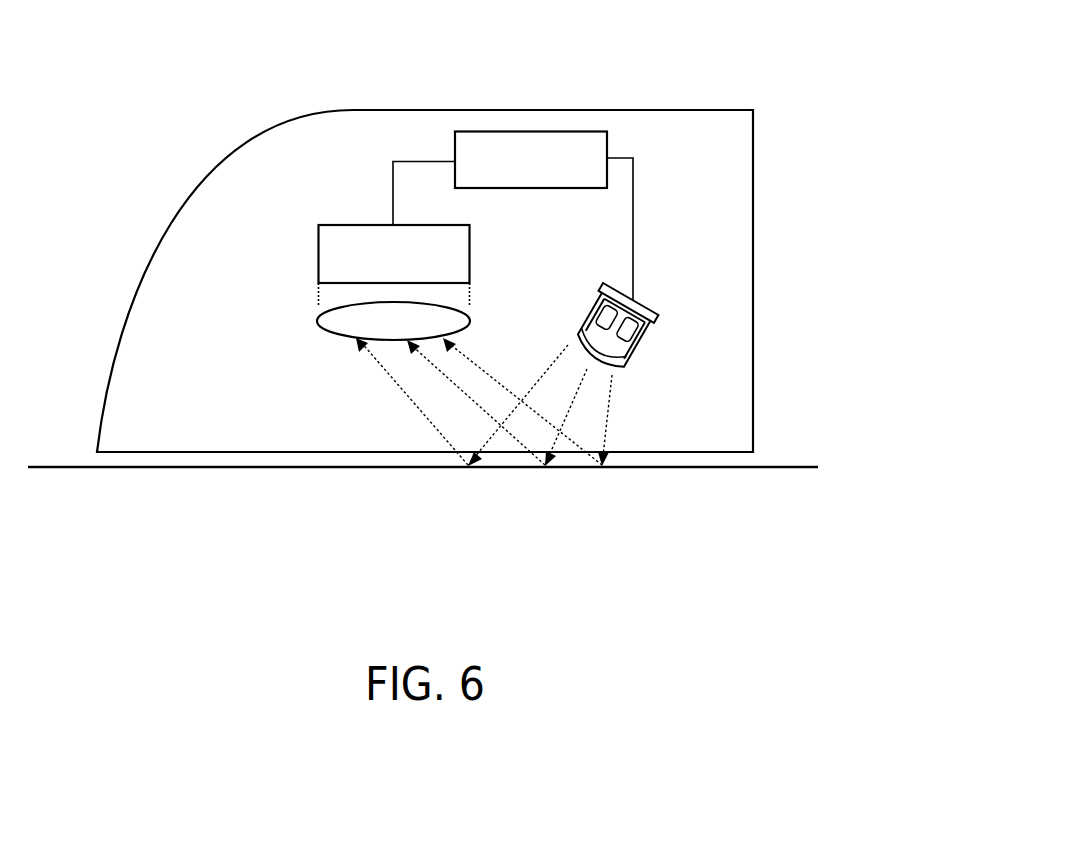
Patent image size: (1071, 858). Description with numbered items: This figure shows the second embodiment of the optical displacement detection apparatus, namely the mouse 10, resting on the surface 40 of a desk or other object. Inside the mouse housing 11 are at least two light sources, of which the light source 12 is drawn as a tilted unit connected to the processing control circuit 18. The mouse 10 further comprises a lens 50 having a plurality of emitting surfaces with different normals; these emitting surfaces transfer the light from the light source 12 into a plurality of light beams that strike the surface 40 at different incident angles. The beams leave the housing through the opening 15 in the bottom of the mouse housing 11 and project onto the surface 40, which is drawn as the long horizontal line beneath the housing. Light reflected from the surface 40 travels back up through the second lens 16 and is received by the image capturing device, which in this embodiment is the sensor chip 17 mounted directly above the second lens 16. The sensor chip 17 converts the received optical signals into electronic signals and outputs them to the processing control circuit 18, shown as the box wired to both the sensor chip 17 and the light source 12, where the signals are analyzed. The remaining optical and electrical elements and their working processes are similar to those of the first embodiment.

The mouse 10 is at (473, 229).
The mouse housing 11 is at (592, 110).
The light source 12 is at (621, 314).
The opening 15 is at (440, 452).
The second lens 16 is at (325, 330).
The sensor chip 17 is at (410, 267).
The processing control circuit 18 is at (546, 171).
The surface 40 is at (710, 470).
The lens 50 is at (563, 325).